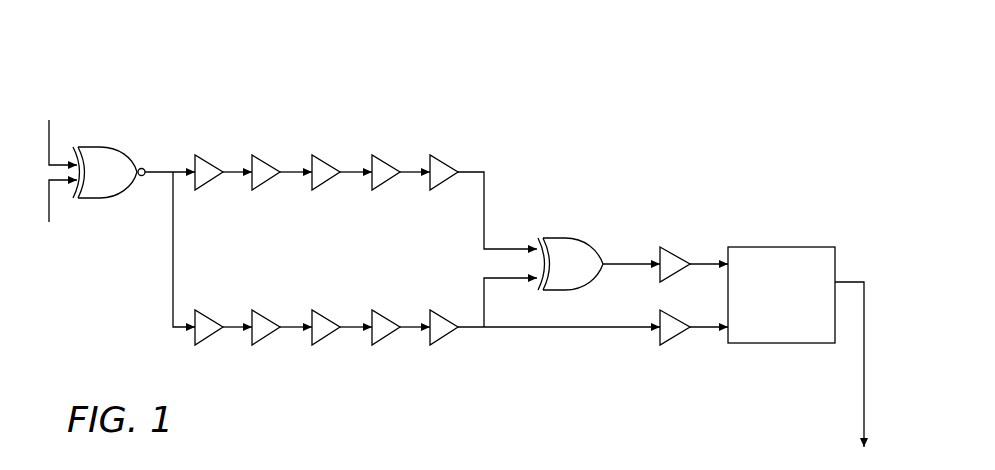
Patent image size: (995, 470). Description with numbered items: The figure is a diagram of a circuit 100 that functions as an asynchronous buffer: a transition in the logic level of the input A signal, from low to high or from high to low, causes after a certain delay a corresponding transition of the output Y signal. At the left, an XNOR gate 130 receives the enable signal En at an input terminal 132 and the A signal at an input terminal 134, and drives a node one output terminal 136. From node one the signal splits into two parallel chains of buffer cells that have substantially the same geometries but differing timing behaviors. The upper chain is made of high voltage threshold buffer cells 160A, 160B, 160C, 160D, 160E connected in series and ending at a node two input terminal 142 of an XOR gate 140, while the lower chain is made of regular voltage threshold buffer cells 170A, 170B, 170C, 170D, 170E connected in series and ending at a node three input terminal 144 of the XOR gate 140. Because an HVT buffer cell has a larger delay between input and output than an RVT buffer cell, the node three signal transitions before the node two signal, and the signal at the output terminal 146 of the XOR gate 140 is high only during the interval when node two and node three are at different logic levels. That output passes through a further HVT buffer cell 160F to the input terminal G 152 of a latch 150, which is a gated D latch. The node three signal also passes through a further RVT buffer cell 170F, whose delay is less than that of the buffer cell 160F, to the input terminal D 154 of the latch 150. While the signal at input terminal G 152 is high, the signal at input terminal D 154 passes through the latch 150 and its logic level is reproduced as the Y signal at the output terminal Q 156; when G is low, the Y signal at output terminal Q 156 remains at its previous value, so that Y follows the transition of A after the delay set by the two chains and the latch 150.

The circuit 100 is at (804, 63).
The XNOR gate 130 is at (110, 147).
The input terminal 132 is at (62, 185).
The input terminal 134 is at (62, 165).
The node 1 output terminal 136 is at (144, 178).
The XOR gate 140 is at (586, 238).
The node 2 input terminal 142 is at (536, 251).
The node 3 input terminal 144 is at (536, 275).
The output terminal 146 is at (604, 263).
The latch 150 is at (787, 247).
The input terminal G 152 is at (729, 253).
The input terminal D 154 is at (729, 345).
The output terminal Q 156 is at (836, 281).
The buffer cell 160A is at (216, 157).
The buffer cell 160B is at (273, 157).
The buffer cell 160C is at (333, 157).
The buffer cell 160D is at (393, 157).
The buffer cell 160E is at (451, 157).
The buffer cell 160F is at (672, 248).
The buffer cell 170A is at (215, 345).
The buffer cell 170B is at (272, 345).
The buffer cell 170C is at (332, 345).
The buffer cell 170D is at (392, 345).
The buffer cell 170E is at (450, 345).
The buffer cell 170F is at (673, 347).